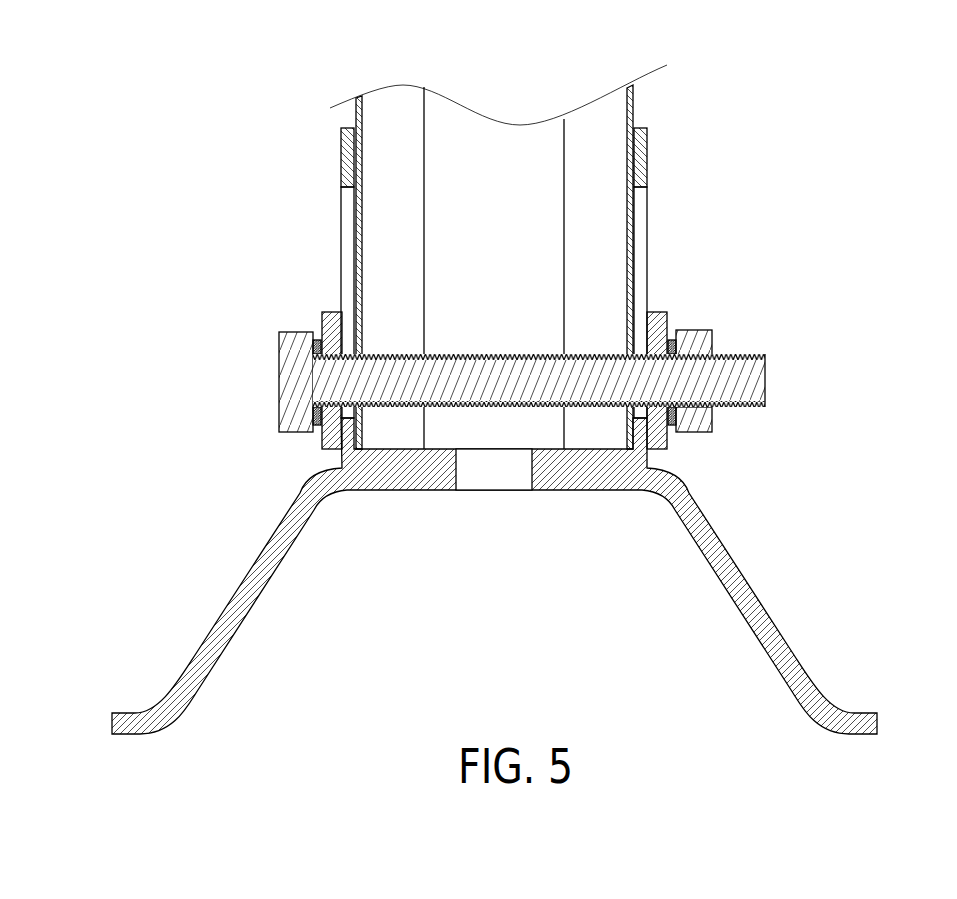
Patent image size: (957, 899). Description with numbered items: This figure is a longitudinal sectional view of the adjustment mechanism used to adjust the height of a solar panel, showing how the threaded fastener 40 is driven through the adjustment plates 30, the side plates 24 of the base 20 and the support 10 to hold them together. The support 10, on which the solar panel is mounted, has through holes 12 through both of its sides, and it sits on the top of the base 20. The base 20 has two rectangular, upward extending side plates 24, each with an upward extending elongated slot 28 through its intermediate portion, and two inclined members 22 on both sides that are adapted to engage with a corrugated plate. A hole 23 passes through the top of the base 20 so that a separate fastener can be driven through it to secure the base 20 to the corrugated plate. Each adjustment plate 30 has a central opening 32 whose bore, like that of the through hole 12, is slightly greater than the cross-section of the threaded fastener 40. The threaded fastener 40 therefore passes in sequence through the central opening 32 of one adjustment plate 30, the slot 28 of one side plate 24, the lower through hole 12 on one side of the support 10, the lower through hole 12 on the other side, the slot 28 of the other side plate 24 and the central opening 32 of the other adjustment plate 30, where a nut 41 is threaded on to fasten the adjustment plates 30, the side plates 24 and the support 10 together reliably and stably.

The support 10 is at (712, 65).
The through hole 12 is at (358, 348).
The base 20 is at (770, 550).
The inclined member 22 is at (768, 623).
The hole 23 is at (492, 478).
The side plate 24 is at (650, 137).
The elongated slot 28 is at (642, 240).
The adjustment plate 30 is at (662, 310).
The central opening 32 is at (672, 338).
The threaded fastener 40 is at (280, 402).
The nut 41 is at (713, 333).